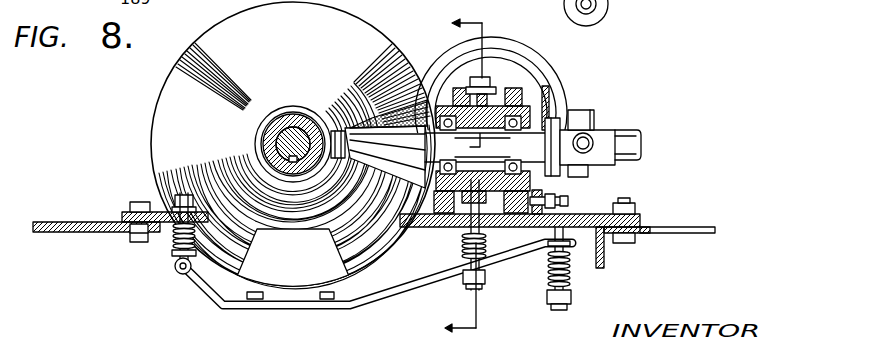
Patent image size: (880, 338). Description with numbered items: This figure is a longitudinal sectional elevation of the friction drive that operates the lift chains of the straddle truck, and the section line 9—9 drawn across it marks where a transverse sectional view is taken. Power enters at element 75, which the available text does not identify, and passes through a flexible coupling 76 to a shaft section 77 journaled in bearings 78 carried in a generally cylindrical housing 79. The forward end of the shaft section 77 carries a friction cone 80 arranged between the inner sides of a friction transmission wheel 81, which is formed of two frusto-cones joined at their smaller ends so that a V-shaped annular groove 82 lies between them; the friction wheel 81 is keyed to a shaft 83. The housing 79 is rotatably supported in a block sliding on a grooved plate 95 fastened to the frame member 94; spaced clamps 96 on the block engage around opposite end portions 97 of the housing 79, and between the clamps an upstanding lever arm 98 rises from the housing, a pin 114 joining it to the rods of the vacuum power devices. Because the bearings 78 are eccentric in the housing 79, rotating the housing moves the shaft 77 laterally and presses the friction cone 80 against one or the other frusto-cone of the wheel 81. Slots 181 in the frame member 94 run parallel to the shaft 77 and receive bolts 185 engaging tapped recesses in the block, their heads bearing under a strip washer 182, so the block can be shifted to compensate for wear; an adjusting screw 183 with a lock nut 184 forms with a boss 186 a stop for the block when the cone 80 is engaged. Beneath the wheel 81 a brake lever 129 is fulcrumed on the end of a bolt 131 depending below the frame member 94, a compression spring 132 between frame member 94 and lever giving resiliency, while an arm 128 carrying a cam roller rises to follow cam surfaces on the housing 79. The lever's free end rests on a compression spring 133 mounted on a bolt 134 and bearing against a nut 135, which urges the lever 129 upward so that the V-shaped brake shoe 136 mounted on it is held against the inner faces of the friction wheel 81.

The section line 9— 9 is at (464, 169).
The output shaft 75 is at (628, 130).
The flexible coupling 76 is at (584, 112).
The shaft section 77 is at (499, 128).
The bearings 78 is at (437, 100).
The housing 79 is at (455, 105).
The friction cone 80 is at (330, 108).
The friction transmission wheel 81 is at (168, 75).
The V-shaped annular groove 82 is at (295, 166).
The shaft 83 is at (282, 118).
The frame member 94 is at (68, 222).
The grooved plate 95 is at (124, 212).
The spaced clamps 96 is at (553, 118).
The end portions of the housing 97 is at (560, 90).
The lever arm 98 is at (492, 138).
The pin 114 is at (472, 84).
The arm 128 is at (468, 262).
The lever 129 is at (385, 306).
The bolt 131 is at (187, 194).
The compression spring 132 is at (174, 252).
The compression spring 133 is at (575, 277).
The bolt 134 is at (566, 292).
The nut 135 is at (549, 294).
The brake shoe 136 is at (293, 257).
The slots 181 is at (428, 222).
The strip washer 182 is at (500, 236).
The adjusting screw 183 is at (567, 204).
The lock nut 184 is at (573, 192).
The bolts 185 is at (458, 240).
The boss 186 is at (547, 112).